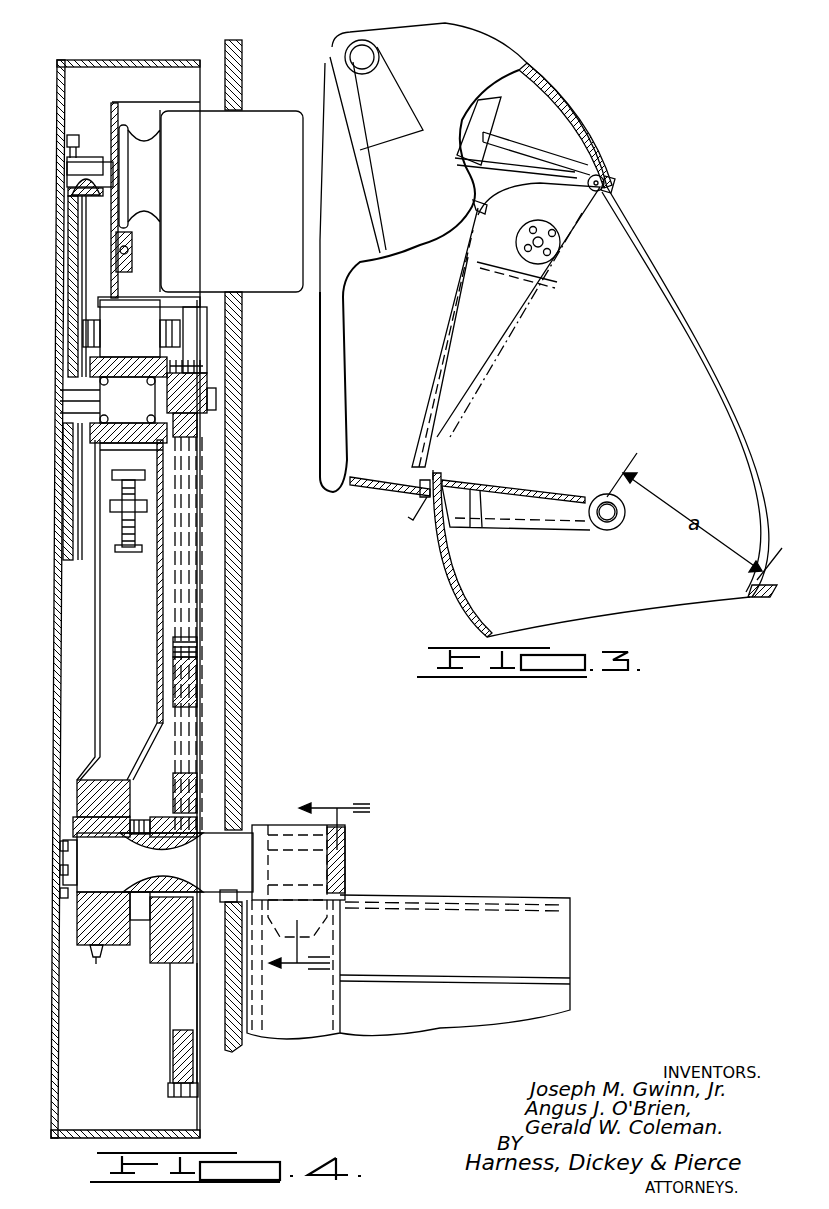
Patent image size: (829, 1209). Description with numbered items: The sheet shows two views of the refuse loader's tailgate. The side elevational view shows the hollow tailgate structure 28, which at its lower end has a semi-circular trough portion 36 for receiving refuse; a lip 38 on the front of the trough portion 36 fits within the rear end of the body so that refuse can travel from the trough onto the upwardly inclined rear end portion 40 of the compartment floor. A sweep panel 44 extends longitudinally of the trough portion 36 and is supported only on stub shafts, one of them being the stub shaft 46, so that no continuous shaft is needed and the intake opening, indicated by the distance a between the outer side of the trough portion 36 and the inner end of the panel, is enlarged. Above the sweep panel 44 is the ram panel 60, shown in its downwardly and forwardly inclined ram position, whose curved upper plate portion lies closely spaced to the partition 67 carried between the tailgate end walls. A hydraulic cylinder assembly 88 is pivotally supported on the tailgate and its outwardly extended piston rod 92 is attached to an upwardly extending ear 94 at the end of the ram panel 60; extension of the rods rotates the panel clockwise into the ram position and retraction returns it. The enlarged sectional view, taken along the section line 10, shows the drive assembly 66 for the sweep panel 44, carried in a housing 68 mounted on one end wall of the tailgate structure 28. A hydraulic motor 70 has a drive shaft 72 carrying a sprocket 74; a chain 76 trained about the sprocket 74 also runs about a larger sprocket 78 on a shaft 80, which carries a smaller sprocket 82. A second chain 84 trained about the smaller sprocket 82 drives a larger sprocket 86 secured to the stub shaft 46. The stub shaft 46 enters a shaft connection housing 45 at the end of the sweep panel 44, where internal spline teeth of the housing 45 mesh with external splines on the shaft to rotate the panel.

In FIG. 4, the section line 10- 10 is at (363, 800).
In FIG. 3, the tailgate structure 28 is at (567, 85).
In FIG. 3, the trough portion 36 is at (460, 601).
In FIG. 3, the lip 38 is at (440, 473).
In FIG. 3, the rear end portion of the floor 40 is at (363, 477).
In FIG. 4, the sweep panel 44 is at (469, 890).
In FIG. 3, the sweep panel 44 is at (520, 493).
In FIG. 4, the shaft connection housing 45 is at (345, 866).
In FIG. 4, the stub shaft 46 is at (236, 871).
In FIG. 3, the ram panel 60 is at (452, 304).
In FIG. 4, the drive assembly 66 is at (74, 1005).
In FIG. 3, the partition 67 is at (468, 208).
In FIG. 4, the housing 68 is at (56, 962).
In FIG. 4, the hydraulic motor 70 is at (255, 118).
In FIG. 4, the drive shaft 72 is at (85, 160).
In FIG. 4, the sprocket 74 is at (70, 133).
In FIG. 4, the chain 76 is at (63, 218).
In FIG. 4, the larger sprocket 78 is at (70, 475).
In FIG. 4, the shaft 80 is at (125, 392).
In FIG. 4, the smaller sprocket 82 is at (207, 380).
In FIG. 4, the chain 84 is at (195, 450).
In FIG. 4, the larger sprocket 86 is at (178, 1050).
In FIG. 3, the hydraulic cylinder assembly 88 is at (504, 110).
In FIG. 3, the piston rod 92 is at (545, 155).
In FIG. 3, the ear 94 is at (612, 188).